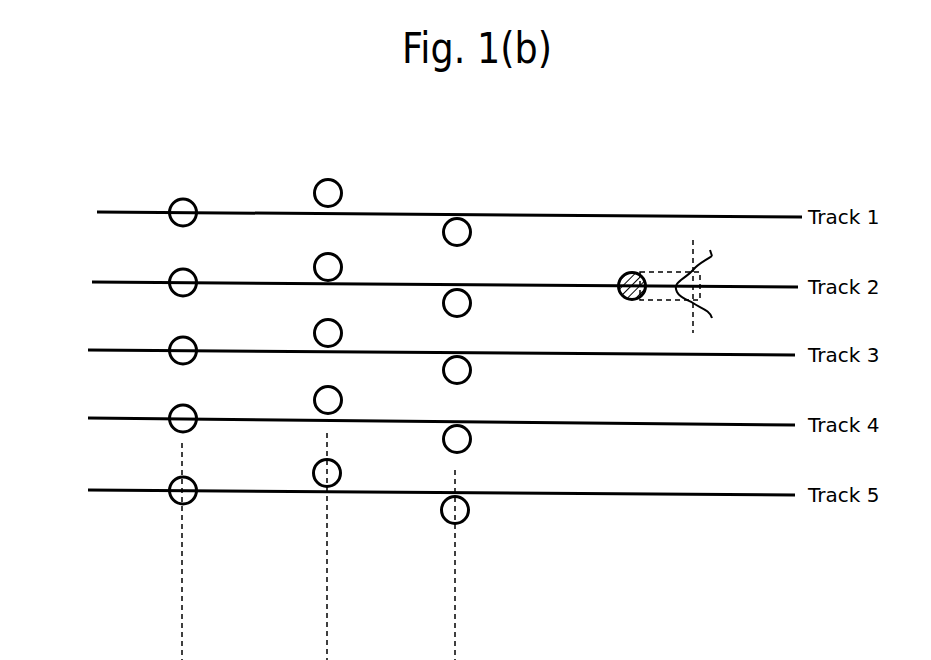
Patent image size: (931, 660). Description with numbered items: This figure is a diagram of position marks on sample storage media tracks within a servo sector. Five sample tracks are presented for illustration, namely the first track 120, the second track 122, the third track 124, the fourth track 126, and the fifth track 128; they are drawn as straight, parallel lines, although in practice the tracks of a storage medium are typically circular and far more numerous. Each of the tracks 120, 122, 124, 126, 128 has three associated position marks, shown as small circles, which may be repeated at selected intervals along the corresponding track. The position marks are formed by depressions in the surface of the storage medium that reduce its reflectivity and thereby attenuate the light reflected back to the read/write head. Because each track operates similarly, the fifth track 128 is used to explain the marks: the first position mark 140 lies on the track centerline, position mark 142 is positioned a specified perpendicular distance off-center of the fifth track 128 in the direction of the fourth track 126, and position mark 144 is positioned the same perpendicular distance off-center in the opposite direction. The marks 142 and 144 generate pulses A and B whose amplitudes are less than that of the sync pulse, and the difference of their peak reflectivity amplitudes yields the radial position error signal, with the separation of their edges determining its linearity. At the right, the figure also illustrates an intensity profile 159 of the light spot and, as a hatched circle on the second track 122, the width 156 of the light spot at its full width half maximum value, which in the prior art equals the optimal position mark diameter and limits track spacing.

The track 1 120 is at (107, 210).
The track 2 122 is at (108, 280).
The track 3 124 is at (102, 349).
The track 4 126 is at (102, 417).
The track 5 128 is at (102, 489).
The position mark 140 is at (192, 500).
The position mark 142 is at (341, 470).
The position mark 144 is at (468, 517).
The width of the light spot 156 is at (638, 272).
The intensity profile 159 is at (713, 262).